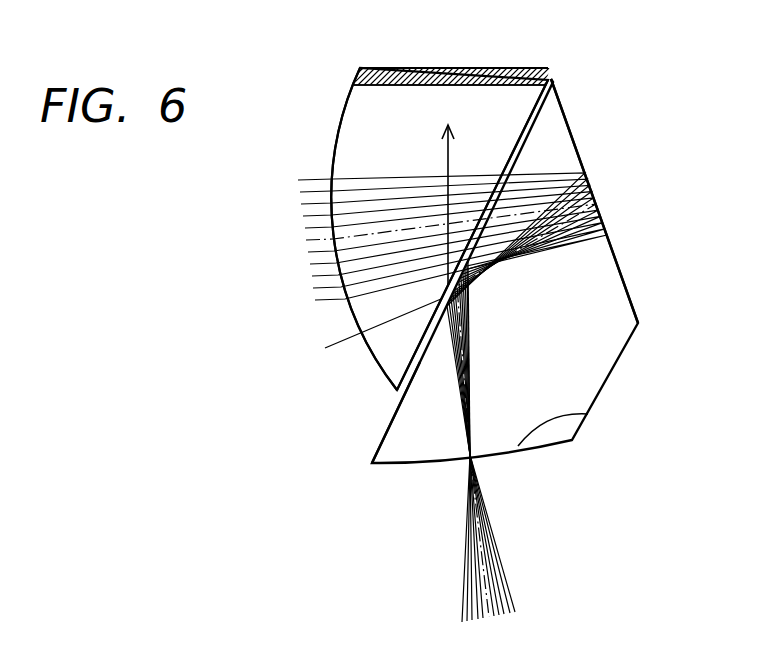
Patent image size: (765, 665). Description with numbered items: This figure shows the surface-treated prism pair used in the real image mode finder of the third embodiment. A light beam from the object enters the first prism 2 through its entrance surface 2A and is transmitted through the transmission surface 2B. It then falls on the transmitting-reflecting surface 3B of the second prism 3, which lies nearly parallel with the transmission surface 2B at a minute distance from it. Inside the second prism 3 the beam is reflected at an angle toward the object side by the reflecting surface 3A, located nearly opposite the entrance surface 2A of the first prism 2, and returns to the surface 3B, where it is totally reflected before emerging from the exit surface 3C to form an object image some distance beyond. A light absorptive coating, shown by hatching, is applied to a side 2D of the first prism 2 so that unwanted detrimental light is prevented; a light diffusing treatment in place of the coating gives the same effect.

The first prism 2 is at (527, 70).
The entrance surface 2A is at (345, 108).
The transmission surface 2B is at (540, 88).
The side of the first prism 2D is at (415, 68).
The second prism 3 is at (608, 297).
The reflecting surface 3A is at (573, 133).
The transmitting-reflecting surface 3B is at (383, 437).
The exit surface 3C is at (588, 414).